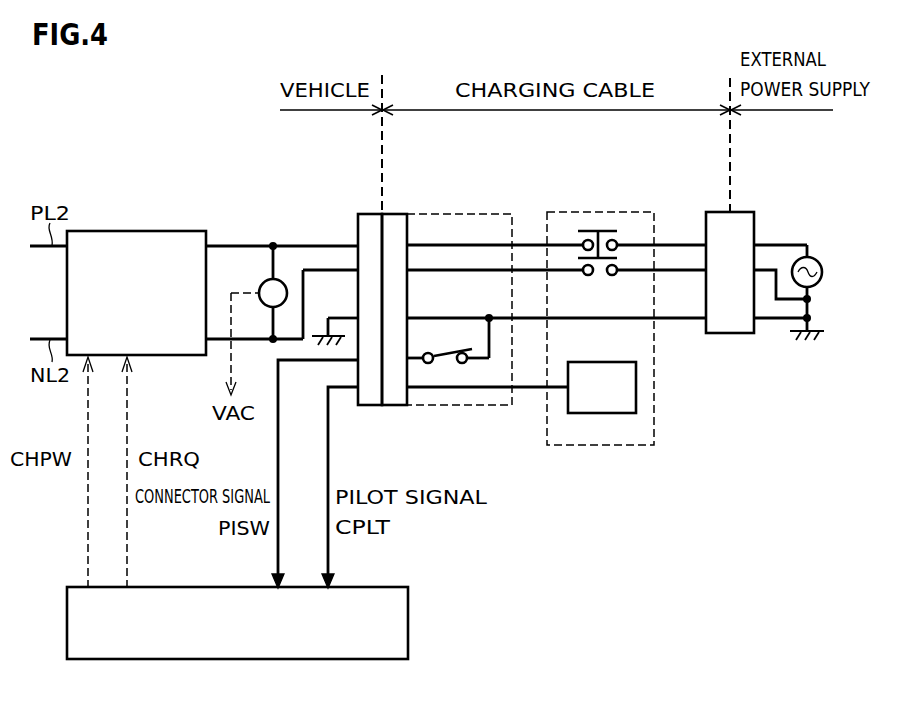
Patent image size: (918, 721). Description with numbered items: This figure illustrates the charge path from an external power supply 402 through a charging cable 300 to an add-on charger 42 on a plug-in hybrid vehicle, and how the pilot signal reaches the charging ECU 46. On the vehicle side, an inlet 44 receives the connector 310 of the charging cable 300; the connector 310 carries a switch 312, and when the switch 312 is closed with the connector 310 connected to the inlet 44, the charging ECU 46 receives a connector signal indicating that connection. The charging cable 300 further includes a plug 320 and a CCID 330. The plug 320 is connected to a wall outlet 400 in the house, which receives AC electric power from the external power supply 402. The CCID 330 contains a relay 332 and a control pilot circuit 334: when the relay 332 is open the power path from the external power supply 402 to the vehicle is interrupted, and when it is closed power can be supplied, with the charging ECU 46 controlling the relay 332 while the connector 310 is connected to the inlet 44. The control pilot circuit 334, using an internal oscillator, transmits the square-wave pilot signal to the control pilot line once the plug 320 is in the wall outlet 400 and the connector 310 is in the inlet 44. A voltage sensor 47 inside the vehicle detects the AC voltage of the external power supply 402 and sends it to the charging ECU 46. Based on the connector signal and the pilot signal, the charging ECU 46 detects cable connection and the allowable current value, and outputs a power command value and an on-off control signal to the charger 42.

The charger 42 is at (185, 231).
The inlet 44 is at (362, 213).
The charging ECU 46 is at (381, 660).
The voltage sensor 47 is at (280, 282).
The charging cable 300 is at (508, 196).
The connector 310 is at (400, 213).
The switch 312 is at (449, 370).
The plug 320 is at (721, 212).
The CCID 330 is at (626, 323).
The relay 332 is at (563, 226).
The control pilot circuit 334 is at (636, 387).
The wall outlet 400 is at (742, 334).
The external power supply 402 is at (813, 259).